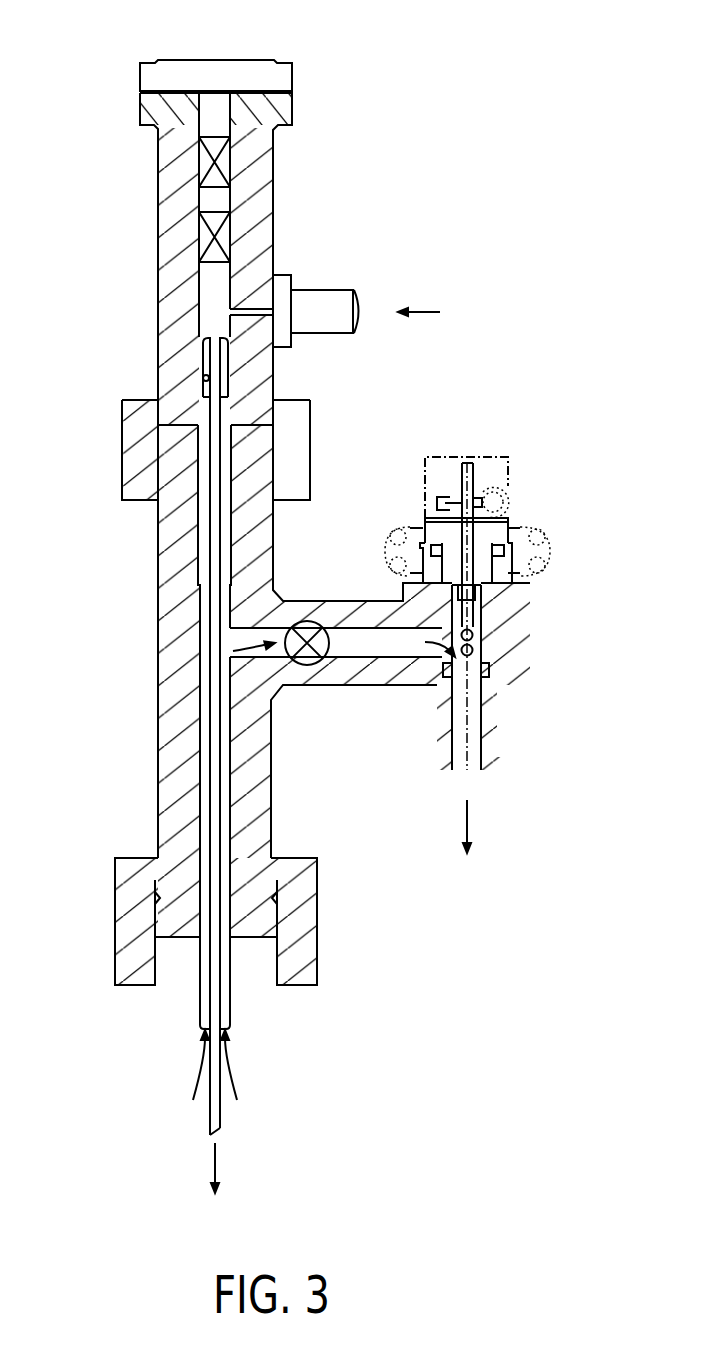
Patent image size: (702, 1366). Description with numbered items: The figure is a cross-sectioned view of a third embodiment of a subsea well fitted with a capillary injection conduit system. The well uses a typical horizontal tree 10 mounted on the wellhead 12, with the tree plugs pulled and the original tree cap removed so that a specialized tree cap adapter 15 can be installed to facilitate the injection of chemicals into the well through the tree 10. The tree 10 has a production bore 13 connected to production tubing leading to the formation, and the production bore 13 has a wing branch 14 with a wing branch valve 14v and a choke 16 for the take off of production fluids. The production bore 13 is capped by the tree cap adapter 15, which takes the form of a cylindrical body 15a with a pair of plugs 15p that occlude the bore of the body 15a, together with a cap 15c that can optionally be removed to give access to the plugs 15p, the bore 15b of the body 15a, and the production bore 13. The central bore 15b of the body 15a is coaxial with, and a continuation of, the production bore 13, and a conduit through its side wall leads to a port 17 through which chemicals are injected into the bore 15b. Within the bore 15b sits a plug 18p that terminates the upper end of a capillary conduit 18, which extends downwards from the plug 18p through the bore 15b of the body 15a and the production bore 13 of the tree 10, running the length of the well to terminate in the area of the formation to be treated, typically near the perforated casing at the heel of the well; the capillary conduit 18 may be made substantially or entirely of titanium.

The horizontal tree 10 is at (303, 714).
The wellhead 12 is at (252, 978).
The production bore 13 is at (228, 833).
The wing branch 14 is at (365, 646).
The wing branch valve 14v is at (310, 622).
The tree cap adapter 15 is at (198, 216).
The cylindrical body 15a is at (172, 237).
The central bore 15b is at (213, 290).
The cap 15c is at (217, 61).
The plugs 15p is at (226, 231).
The choke 16 is at (514, 469).
The port 17 is at (324, 292).
The capillary conduit 18 is at (219, 1115).
The plug 18p is at (225, 377).